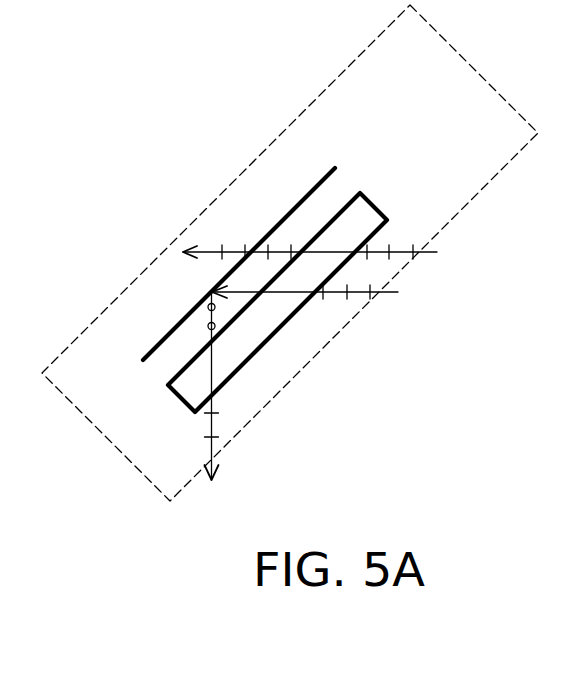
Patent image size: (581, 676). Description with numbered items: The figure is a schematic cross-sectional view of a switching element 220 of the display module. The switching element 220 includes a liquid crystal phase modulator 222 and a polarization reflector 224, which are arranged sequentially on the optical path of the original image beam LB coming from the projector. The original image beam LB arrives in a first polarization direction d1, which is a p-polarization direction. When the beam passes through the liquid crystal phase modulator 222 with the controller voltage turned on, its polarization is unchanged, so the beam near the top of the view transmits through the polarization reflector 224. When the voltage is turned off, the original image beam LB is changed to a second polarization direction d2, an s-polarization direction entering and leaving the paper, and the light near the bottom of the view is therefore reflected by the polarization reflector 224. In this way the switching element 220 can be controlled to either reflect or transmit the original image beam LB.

The switching element 220 is at (557, 480).
The liquid crystal phase modulator 222 is at (365, 222).
The polarization reflector 224 is at (297, 205).
The original image beam LB is at (398, 292).
The first polarization direction d1 is at (413, 247).
The second polarization direction d2 is at (208, 327).